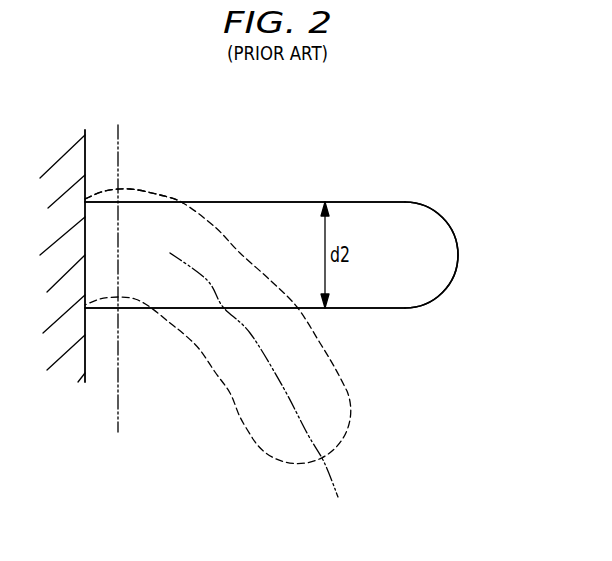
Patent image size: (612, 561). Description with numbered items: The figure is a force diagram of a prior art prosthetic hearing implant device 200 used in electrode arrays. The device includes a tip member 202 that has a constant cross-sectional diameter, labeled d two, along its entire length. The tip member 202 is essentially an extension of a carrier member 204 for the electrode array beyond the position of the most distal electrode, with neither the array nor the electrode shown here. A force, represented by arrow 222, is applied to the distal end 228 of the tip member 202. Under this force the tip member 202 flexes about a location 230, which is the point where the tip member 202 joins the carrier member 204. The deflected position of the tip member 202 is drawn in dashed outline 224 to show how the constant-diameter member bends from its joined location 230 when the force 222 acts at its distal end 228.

The prosthetic hearing implant device 200 is at (475, 263).
The tip member 202 is at (243, 188).
The carrier member 204 is at (105, 308).
The force 222 is at (397, 188).
The deflected beam position 224 is at (340, 380).
The distal end 228 is at (457, 233).
The location 230 is at (147, 200).